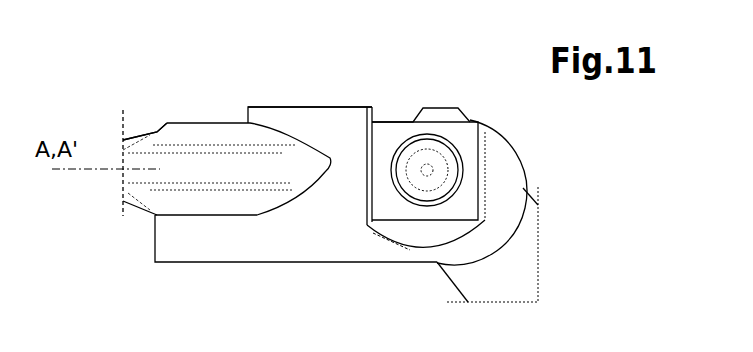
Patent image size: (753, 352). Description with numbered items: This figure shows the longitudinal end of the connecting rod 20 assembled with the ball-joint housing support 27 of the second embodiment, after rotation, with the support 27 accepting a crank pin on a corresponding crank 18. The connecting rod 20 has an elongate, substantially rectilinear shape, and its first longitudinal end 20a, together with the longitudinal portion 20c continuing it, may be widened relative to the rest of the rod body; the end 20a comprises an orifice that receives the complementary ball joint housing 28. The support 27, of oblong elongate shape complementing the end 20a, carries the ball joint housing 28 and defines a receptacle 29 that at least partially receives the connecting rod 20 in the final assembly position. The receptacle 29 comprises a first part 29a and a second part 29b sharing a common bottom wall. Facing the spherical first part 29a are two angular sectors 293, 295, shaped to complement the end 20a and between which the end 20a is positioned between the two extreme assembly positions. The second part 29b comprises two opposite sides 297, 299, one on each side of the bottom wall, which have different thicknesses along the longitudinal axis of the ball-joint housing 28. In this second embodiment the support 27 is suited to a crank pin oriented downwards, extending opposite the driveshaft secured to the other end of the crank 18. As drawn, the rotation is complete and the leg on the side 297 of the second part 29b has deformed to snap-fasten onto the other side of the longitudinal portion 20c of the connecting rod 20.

The crank 18 is at (530, 262).
The connecting rod 20 is at (132, 227).
The first longitudinal end 20a is at (468, 125).
The longitudinal portion 20c is at (223, 202).
The support 27 is at (345, 96).
The ball joint housing 28 is at (442, 178).
The receptacle 29 is at (296, 95).
The first part of the receptacle 29a is at (412, 93).
The second part of the receptacle 29b is at (163, 98).
The angular sector 293 is at (418, 250).
The angular sector 295 is at (510, 177).
The side of the receptacle second part 297 is at (268, 107).
The side of the receptacle second part 299 is at (292, 262).